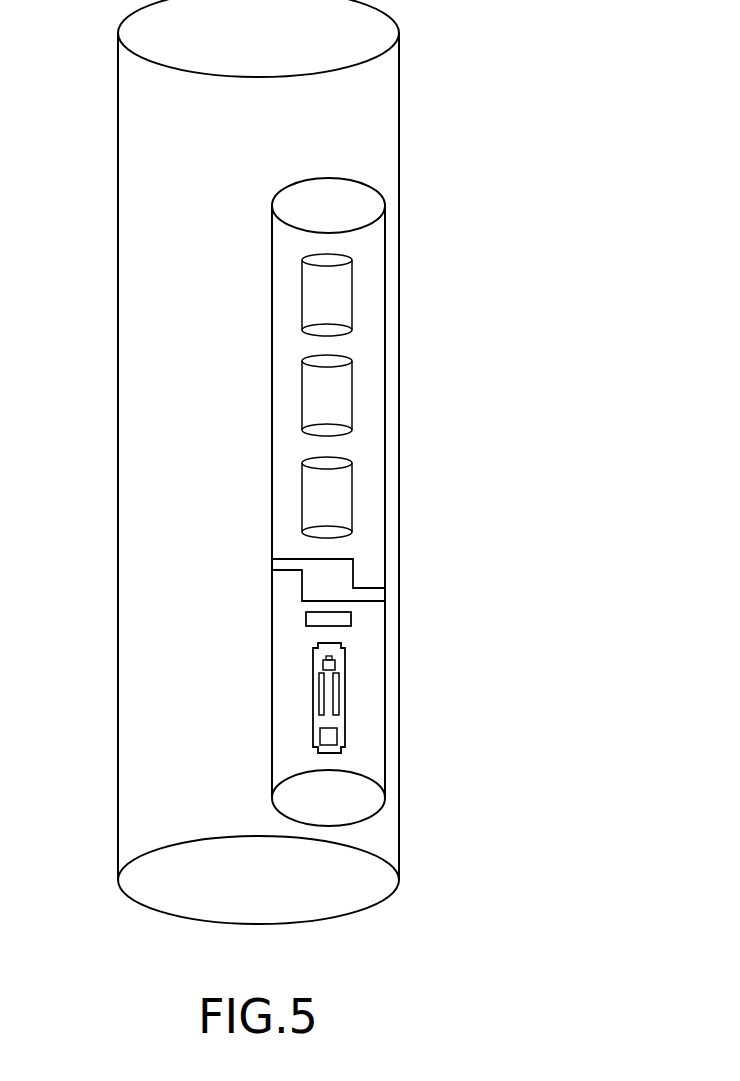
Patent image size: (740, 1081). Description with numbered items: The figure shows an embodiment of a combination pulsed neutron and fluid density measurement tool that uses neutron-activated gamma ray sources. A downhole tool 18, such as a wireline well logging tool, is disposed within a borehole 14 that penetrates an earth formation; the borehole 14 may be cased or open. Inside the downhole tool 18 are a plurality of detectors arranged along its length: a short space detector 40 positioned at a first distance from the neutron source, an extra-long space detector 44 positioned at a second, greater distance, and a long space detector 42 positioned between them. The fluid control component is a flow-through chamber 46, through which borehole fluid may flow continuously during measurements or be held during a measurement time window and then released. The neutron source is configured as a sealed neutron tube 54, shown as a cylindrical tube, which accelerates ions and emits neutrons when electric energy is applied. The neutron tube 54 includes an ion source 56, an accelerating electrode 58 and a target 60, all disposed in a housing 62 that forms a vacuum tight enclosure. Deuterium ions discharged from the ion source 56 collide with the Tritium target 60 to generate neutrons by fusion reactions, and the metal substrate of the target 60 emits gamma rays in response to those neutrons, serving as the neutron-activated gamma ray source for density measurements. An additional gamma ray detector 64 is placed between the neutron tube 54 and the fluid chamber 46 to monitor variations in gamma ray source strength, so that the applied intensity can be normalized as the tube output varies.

The borehole 14 is at (142, 112).
The downhole tool 18 is at (287, 534).
The short space (SS) detector 40 is at (315, 501).
The long space (LS) detector 42 is at (315, 399).
The extra-long space (XLS) detector 44 is at (315, 300).
The flow-through chamber 46 is at (312, 582).
The neutron tube 54 is at (311, 733).
The ion source 56 is at (323, 738).
The accelerating electrode 58 is at (319, 692).
The target 60 is at (336, 666).
The housing 62 is at (396, 725).
The gamma ray detector 64 is at (313, 620).